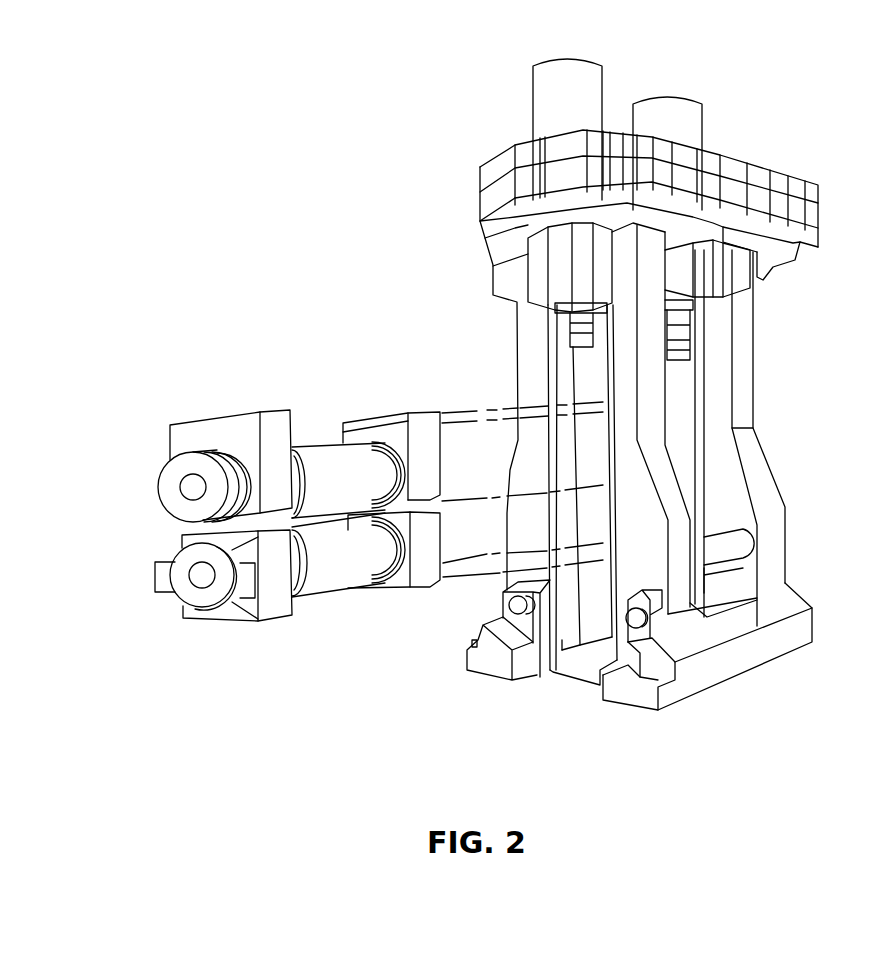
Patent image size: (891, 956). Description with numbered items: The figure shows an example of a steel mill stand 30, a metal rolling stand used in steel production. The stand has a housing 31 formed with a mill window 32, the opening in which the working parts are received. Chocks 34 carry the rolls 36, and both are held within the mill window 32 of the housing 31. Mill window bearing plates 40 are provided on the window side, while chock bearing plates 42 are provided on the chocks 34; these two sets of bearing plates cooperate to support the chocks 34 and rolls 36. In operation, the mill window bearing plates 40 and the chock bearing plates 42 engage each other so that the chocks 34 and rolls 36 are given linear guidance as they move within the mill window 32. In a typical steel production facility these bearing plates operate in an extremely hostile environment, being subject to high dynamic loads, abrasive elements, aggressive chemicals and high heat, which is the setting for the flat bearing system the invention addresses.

The steel mill stand 30 is at (878, 108).
The housing 31 is at (793, 653).
The mill window 32 is at (594, 362).
The chocks 34 is at (172, 427).
The rolls 36 is at (324, 453).
The mill window bearing plates 40 is at (562, 364).
The chock bearing plates 42 is at (273, 429).